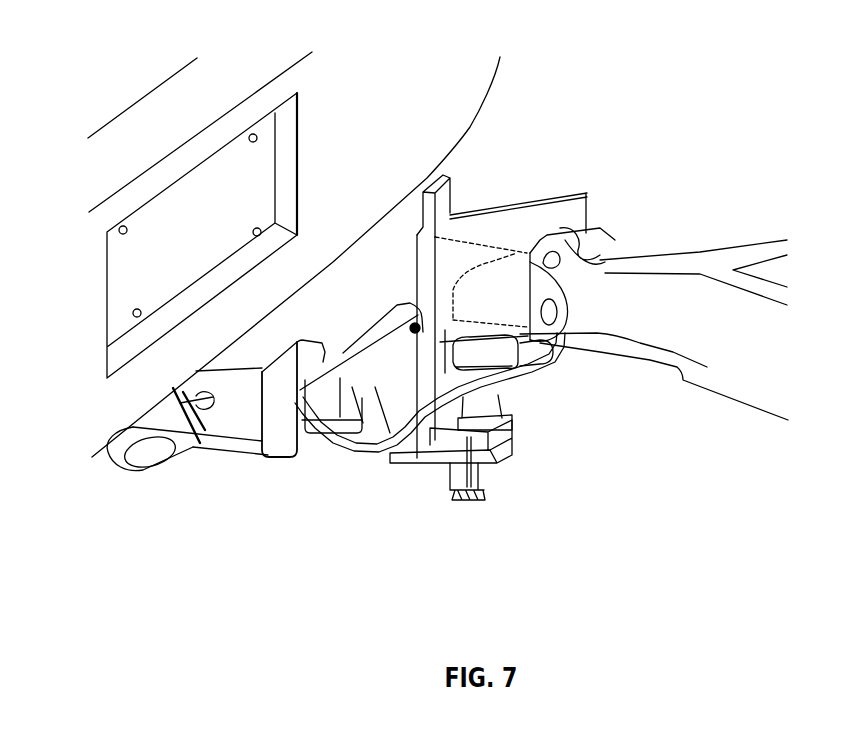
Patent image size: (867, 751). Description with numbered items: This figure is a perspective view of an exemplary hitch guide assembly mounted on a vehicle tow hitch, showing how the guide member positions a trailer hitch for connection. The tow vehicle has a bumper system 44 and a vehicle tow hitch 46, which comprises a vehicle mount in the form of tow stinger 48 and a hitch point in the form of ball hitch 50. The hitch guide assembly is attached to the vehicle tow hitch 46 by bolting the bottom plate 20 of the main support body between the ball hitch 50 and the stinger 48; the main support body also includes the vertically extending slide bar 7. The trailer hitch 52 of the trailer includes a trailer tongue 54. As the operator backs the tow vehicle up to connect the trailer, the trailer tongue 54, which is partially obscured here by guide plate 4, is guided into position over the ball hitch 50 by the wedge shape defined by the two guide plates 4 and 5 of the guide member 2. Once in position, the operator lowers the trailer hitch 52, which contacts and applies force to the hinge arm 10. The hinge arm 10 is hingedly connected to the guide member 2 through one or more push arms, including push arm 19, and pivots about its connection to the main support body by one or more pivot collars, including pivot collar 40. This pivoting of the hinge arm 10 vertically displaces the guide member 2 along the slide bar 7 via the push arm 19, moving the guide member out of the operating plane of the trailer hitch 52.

The guide member 2 is at (420, 237).
The guide plate 4 is at (530, 207).
The guide plate 5 is at (557, 210).
The slide bar 7 is at (447, 197).
The hinge arm 10 is at (548, 366).
The push arm 19 is at (330, 430).
The bottom plate 20 is at (493, 473).
The pivot collar 40 is at (412, 465).
The bumper system 44 is at (475, 90).
The vehicle tow hitch 46 is at (235, 420).
The tow stinger 48 is at (392, 462).
The ball hitch 50 is at (498, 392).
The trailer hitch 52 is at (707, 263).
The trailer tongue 54 is at (600, 252).